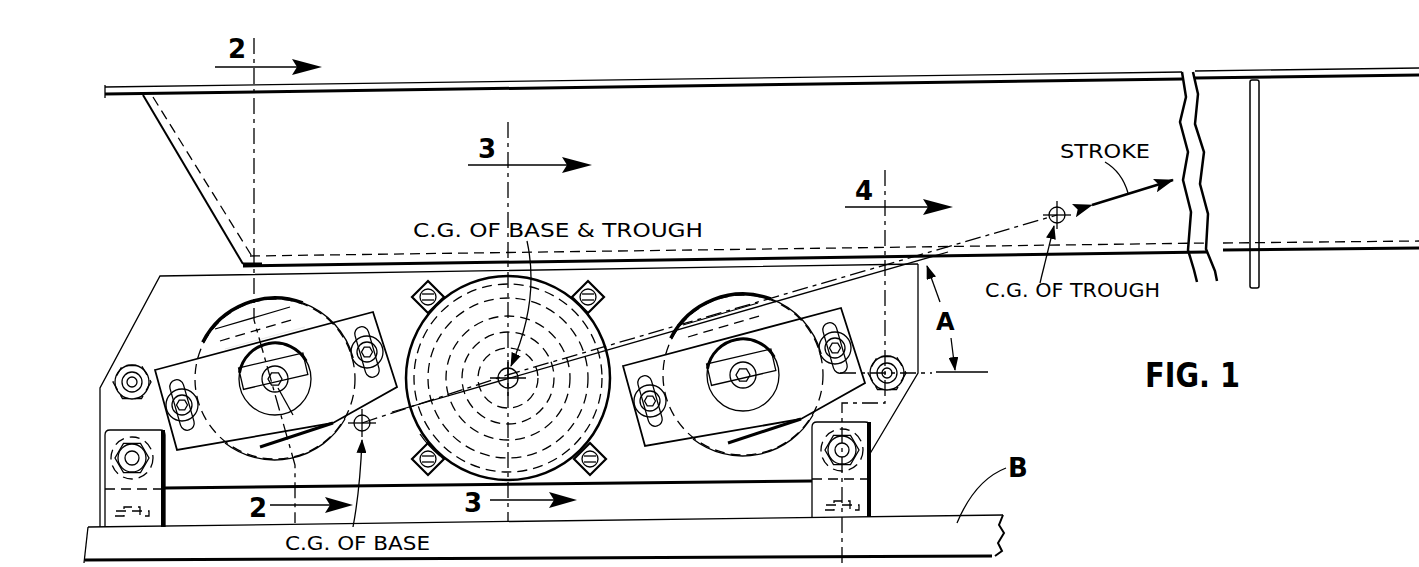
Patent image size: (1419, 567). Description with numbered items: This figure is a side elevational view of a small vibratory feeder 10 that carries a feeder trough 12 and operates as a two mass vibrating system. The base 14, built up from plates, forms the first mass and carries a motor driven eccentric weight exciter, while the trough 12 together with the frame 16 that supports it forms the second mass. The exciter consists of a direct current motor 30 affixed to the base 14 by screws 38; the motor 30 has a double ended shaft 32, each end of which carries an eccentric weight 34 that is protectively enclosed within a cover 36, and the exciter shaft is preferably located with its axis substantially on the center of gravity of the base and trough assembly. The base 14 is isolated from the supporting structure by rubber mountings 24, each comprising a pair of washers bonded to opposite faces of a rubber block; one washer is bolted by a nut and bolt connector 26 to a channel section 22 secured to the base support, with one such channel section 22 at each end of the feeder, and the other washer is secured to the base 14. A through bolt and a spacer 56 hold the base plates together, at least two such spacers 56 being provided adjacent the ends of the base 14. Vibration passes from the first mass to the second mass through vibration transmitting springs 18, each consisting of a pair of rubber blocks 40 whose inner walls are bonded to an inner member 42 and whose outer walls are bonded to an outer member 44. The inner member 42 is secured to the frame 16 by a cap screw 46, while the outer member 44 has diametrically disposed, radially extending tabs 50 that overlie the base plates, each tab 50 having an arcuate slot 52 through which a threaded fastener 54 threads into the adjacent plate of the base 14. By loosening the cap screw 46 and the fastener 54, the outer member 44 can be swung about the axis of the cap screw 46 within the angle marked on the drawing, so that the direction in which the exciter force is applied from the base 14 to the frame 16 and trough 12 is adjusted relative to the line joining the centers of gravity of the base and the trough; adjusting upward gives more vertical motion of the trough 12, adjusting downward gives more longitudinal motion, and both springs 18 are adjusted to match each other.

The feeder 10 is at (968, 385).
The feeder trough 12 is at (1327, 230).
The base 14 is at (158, 290).
The frame 16 is at (240, 262).
The vibration transmitting springs 18 is at (228, 309).
The channel section 22 is at (155, 508).
The rubber mounting 24 is at (172, 502).
The nut and bolt connector 26 is at (157, 462).
The motor 30 is at (600, 318).
The double ended shaft 32 is at (478, 360).
The eccentric weight 34 is at (578, 480).
The cover 36 is at (420, 435).
The screws 38 is at (505, 320).
The rubber blocks 40 is at (232, 356).
The inner member 42 is at (250, 393).
The outer member 44 is at (267, 345).
The cap screw 46 is at (270, 390).
The tabs 50 is at (175, 368).
The arcuate slot 52 is at (176, 375).
The threaded fastener 54 is at (165, 407).
The spacer 56 is at (122, 365).